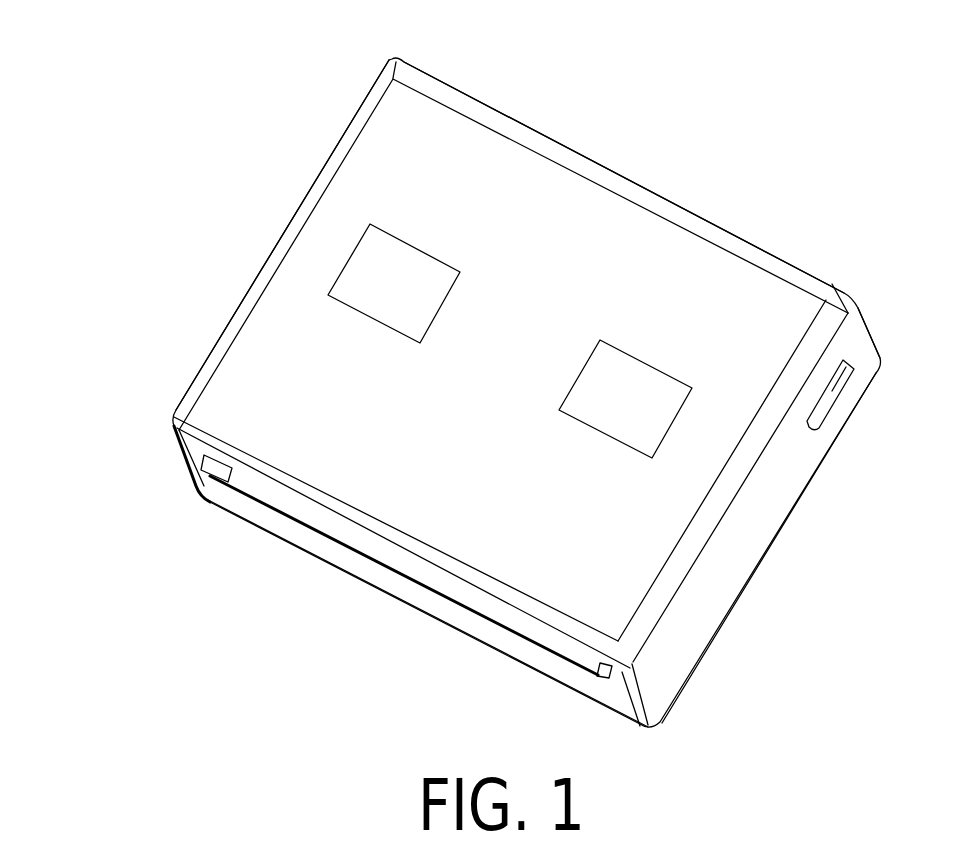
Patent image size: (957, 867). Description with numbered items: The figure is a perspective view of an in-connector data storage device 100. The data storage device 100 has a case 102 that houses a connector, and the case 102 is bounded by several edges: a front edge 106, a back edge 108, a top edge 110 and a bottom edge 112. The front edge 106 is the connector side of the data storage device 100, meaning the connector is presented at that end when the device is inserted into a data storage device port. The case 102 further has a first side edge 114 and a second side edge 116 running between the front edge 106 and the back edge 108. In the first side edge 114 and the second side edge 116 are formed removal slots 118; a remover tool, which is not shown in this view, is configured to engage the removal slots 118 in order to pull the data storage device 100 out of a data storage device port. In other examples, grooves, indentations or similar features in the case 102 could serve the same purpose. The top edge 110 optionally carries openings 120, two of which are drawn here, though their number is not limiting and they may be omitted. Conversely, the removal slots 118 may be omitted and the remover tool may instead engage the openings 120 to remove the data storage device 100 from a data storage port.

The data storage device 100 is at (130, 133).
The case 102 is at (383, 88).
The front edge 106 is at (220, 495).
The back edge 108 is at (583, 152).
The top edge 110 is at (695, 258).
The bottom edge 112 is at (790, 515).
The first side edge 114 is at (218, 338).
The second side edge 116 is at (690, 622).
The removal slots 118 is at (828, 395).
The openings 120 is at (428, 278).